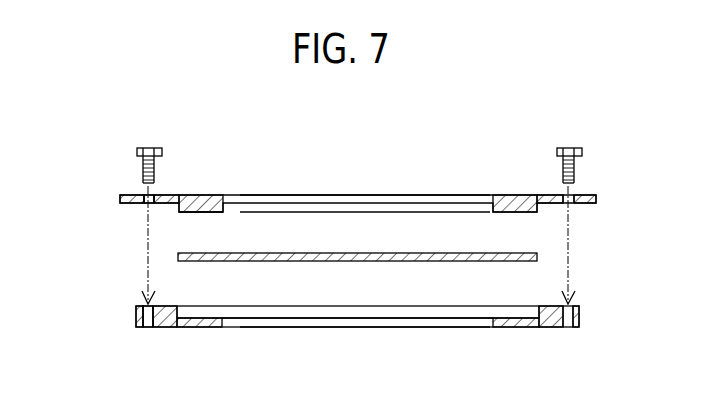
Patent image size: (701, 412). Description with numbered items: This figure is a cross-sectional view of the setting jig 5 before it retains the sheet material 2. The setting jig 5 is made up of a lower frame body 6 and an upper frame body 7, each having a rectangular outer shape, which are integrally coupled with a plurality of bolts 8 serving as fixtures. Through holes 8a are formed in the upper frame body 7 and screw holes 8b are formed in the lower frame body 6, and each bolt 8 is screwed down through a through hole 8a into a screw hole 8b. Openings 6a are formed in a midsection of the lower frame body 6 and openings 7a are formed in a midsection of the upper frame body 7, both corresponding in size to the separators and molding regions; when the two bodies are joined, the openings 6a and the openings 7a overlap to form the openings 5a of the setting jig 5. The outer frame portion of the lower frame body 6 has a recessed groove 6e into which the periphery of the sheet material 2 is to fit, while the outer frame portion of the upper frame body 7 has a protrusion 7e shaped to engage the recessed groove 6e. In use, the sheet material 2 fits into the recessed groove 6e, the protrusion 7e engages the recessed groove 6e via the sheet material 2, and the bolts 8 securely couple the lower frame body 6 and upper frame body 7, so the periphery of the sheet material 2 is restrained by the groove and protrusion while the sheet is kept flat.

The setting jig 5 is at (44, 184).
The bolt 8 is at (162, 150).
The upper frame body 7 is at (598, 200).
The opening 5a is at (319, 199).
The opening 7a is at (390, 205).
The protrusion 7e is at (203, 215).
The through hole 8a is at (148, 204).
The sheet material 2 is at (538, 257).
The lower frame body 6 is at (581, 320).
The recessed groove 6e is at (198, 313).
The opening 6a is at (433, 323).
The screw hole 8b is at (149, 328).